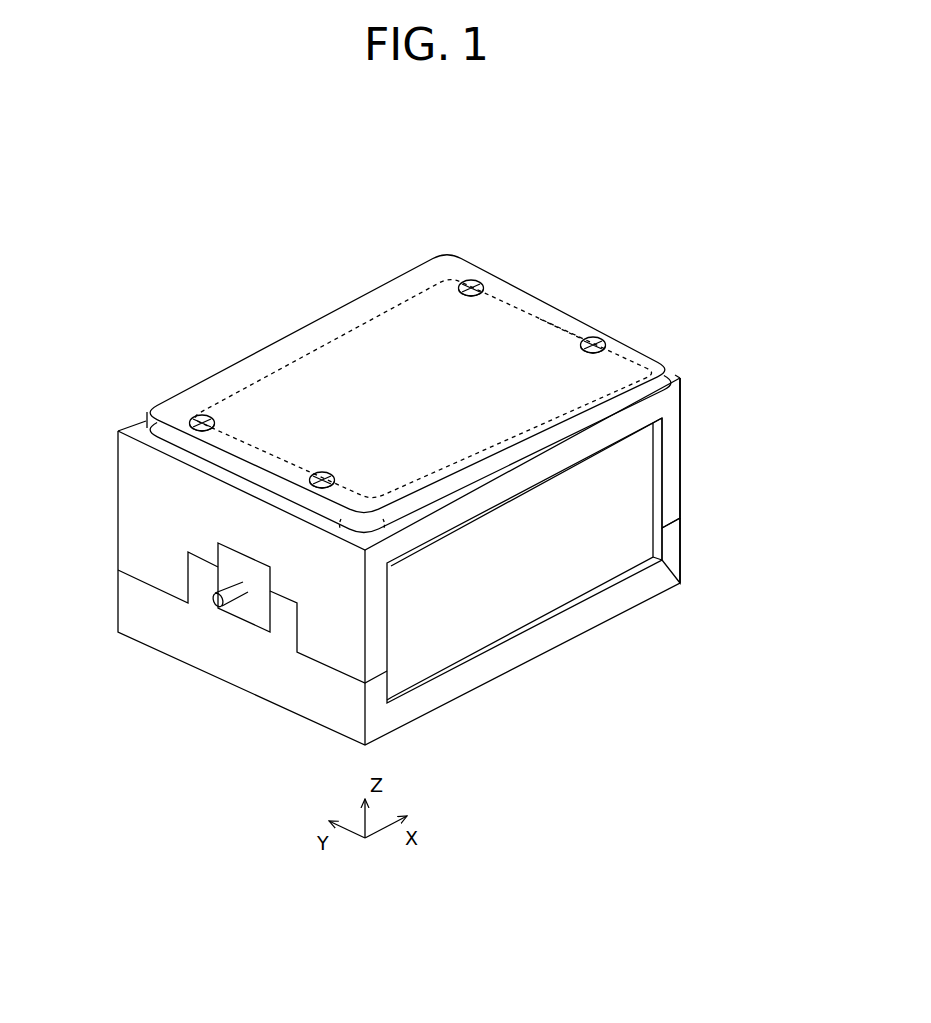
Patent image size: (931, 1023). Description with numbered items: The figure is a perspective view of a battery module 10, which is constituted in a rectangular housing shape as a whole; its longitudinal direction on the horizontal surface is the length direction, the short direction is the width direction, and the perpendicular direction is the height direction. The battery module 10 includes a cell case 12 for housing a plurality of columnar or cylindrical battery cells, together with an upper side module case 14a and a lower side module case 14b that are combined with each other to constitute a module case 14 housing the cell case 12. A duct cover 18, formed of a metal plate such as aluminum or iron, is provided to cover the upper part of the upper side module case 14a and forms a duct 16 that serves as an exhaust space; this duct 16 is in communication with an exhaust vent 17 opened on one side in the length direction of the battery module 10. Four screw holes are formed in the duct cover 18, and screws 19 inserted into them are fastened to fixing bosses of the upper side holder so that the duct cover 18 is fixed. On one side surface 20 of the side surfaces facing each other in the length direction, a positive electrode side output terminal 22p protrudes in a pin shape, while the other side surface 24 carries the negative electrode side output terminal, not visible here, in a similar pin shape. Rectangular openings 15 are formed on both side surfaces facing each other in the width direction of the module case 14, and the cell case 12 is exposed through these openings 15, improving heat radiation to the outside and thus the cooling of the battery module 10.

The battery module 10 is at (562, 216).
The cell case 12 is at (543, 590).
The module case 14 is at (765, 397).
The upper side module case 14a is at (673, 436).
The lower side module case 14b is at (673, 548).
The rectangular opening 15 is at (616, 576).
The duct 16 is at (389, 326).
The exhaust vent 17 is at (560, 327).
The duct cover 18 is at (300, 329).
The screw 19 is at (476, 281).
The one side surface 20 is at (134, 515).
The positive electrode side output terminal 22p is at (231, 613).
The other side surface 24 is at (686, 398).